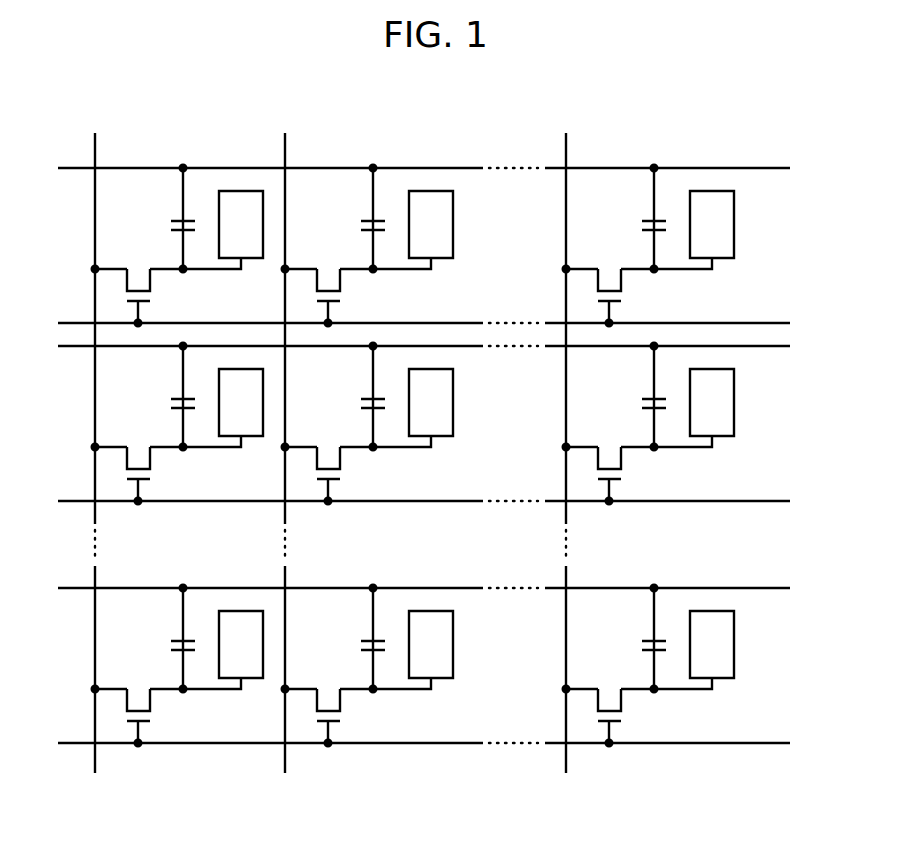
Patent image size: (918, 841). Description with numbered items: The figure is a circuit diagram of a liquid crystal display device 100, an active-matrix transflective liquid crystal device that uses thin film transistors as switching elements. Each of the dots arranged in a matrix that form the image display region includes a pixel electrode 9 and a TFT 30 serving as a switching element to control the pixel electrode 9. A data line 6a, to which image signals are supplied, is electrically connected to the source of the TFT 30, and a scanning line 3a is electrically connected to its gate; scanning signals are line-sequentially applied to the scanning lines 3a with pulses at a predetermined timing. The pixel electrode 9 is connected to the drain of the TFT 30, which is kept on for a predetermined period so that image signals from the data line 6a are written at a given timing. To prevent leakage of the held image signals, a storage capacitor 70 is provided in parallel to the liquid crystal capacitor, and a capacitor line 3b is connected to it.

The liquid crystal display device 100 is at (807, 141).
The data line 6a is at (607, 133).
The scanning line 3a is at (83, 743).
The capacitor line 3b is at (83, 589).
The pixel electrode 9 is at (709, 203).
The TFT 30 is at (163, 300).
The storage capacitor 70 is at (160, 228).